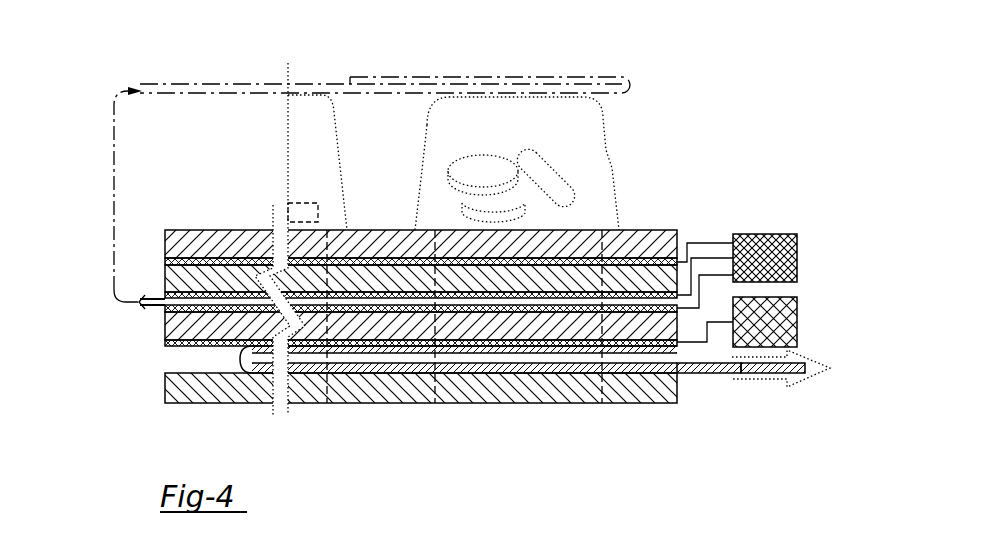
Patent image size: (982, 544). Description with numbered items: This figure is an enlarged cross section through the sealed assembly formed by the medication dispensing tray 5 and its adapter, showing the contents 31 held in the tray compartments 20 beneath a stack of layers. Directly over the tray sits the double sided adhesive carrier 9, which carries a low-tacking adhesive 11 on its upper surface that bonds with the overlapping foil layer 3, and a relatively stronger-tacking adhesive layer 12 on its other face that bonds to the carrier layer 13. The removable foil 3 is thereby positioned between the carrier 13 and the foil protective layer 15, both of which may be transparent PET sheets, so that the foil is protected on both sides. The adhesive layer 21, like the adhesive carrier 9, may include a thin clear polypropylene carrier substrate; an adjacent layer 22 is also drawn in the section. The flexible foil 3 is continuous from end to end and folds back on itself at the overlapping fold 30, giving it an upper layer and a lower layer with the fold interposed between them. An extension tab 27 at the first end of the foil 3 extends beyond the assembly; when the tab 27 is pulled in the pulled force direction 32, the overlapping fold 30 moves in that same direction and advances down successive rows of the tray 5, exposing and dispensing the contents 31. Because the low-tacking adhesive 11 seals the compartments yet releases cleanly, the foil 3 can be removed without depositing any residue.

The overlapping foil layer 3 is at (713, 377).
The medication dispensing tray 5 is at (613, 168).
The double sided adhesive carrier 9 is at (162, 258).
The low-tacking adhesive 11 is at (797, 315).
The stronger-tacking adhesive layer 12 is at (797, 250).
The carrier layer 13 is at (500, 68).
The foil protective layer 15 is at (150, 390).
The tray compartments 20 is at (412, 278).
The adhesive layer 21 is at (162, 305).
The second electrode layer 22 is at (411, 326).
The extension tab 27 is at (690, 377).
The overlapping fold 30 is at (236, 365).
The contents 31 is at (513, 175).
The pulled force direction 32 is at (800, 395).